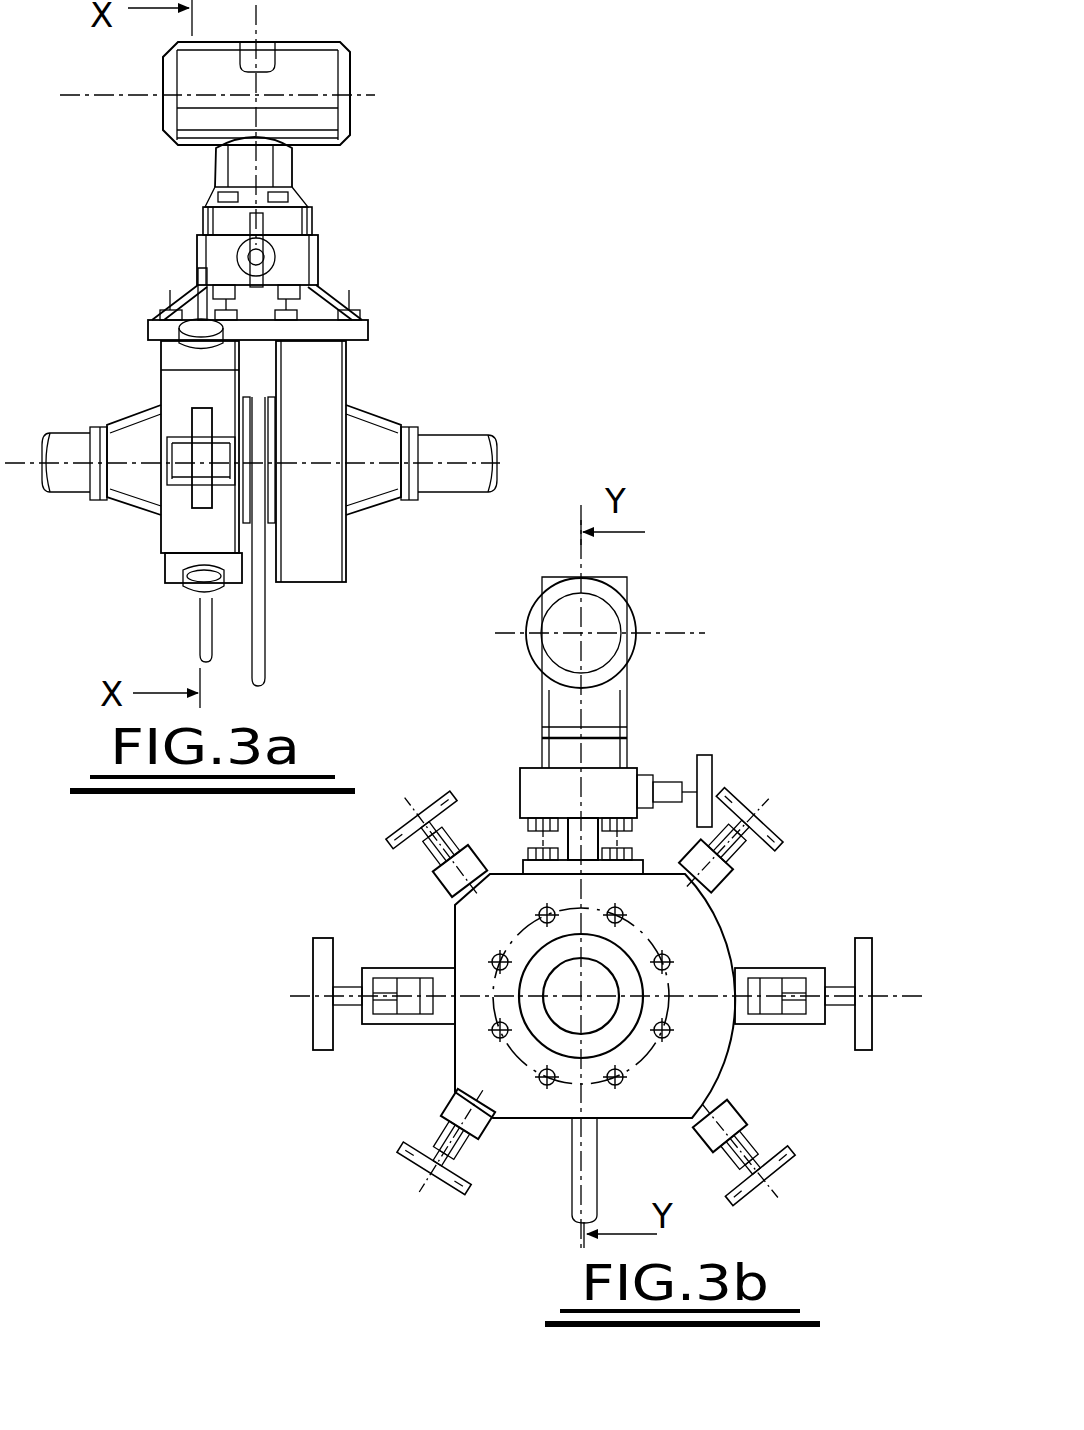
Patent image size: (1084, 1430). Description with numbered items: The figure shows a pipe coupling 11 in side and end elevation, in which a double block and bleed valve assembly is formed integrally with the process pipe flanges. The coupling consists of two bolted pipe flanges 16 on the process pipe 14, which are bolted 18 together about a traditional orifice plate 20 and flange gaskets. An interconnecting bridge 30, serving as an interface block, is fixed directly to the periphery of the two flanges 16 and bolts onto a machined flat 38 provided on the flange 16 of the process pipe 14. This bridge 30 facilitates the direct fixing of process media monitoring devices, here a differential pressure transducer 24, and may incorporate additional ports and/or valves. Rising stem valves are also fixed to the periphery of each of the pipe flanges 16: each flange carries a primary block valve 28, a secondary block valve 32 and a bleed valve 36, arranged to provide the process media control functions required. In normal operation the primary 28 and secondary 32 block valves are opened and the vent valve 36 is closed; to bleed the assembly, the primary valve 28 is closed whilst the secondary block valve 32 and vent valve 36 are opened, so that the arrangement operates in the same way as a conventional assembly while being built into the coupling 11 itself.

In FIG. 3A, the pipe coupling 11 is at (143, 352).
In FIG. 3B, the pipe coupling 11 is at (785, 898).
In FIG. 3A, the process pipe 14 is at (447, 452).
In FIG. 3A, the pipe flange 16 is at (198, 396).
In FIG. 3B, the pipe flange 16 is at (705, 1043).
In FIG. 3B, the bolt 18 is at (620, 1085).
In FIG. 3A, the orifice plate 20 is at (262, 622).
In FIG. 3A, the ΔP transducer 24 is at (302, 72).
In FIG. 3B, the ΔP transducer 24 is at (600, 596).
In FIG. 3A, the primary block valve 28 is at (200, 492).
In FIG. 3B, the primary block valve 28 is at (322, 1012).
In FIG. 3A, the interconnecting bridge 30 is at (300, 264).
In FIG. 3B, the interconnecting bridge 30 is at (612, 790).
In FIG. 3A, the secondary block valve 32 is at (170, 322).
In FIG. 3B, the secondary block valve 32 is at (410, 822).
In FIG. 3A, the bleed valve 36 is at (187, 596).
In FIG. 3B, the bleed valve 36 is at (485, 1122).
In FIG. 3B, the machined flat 38 is at (522, 868).